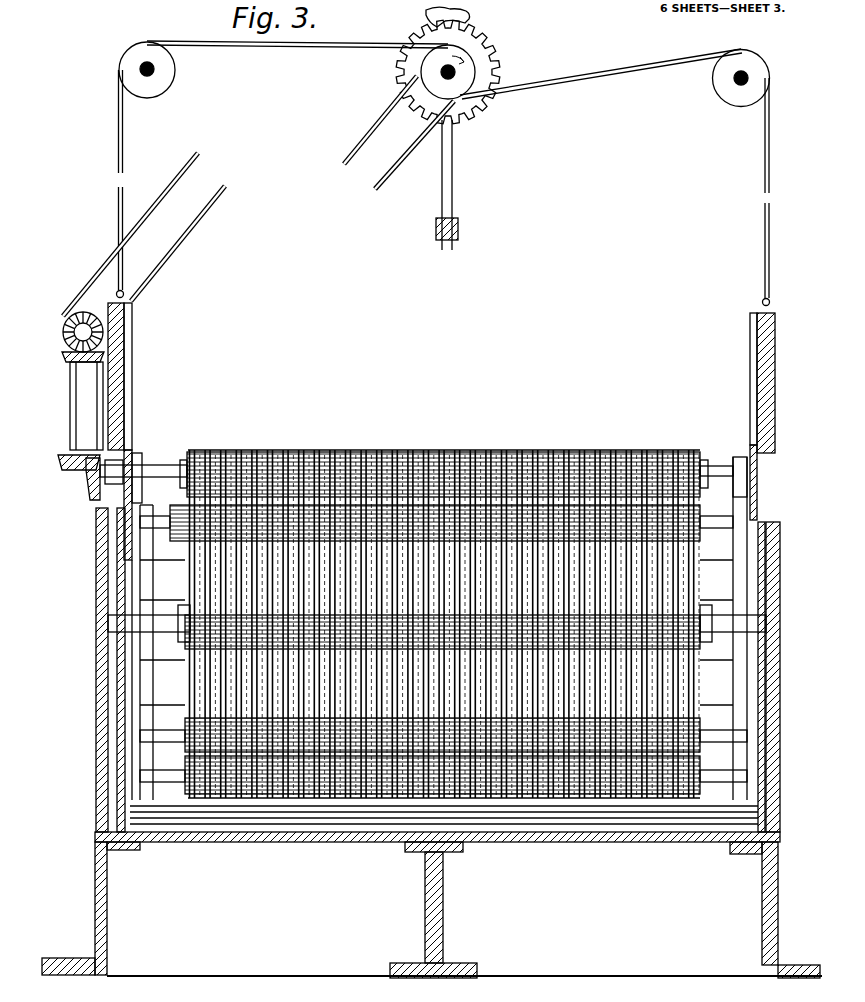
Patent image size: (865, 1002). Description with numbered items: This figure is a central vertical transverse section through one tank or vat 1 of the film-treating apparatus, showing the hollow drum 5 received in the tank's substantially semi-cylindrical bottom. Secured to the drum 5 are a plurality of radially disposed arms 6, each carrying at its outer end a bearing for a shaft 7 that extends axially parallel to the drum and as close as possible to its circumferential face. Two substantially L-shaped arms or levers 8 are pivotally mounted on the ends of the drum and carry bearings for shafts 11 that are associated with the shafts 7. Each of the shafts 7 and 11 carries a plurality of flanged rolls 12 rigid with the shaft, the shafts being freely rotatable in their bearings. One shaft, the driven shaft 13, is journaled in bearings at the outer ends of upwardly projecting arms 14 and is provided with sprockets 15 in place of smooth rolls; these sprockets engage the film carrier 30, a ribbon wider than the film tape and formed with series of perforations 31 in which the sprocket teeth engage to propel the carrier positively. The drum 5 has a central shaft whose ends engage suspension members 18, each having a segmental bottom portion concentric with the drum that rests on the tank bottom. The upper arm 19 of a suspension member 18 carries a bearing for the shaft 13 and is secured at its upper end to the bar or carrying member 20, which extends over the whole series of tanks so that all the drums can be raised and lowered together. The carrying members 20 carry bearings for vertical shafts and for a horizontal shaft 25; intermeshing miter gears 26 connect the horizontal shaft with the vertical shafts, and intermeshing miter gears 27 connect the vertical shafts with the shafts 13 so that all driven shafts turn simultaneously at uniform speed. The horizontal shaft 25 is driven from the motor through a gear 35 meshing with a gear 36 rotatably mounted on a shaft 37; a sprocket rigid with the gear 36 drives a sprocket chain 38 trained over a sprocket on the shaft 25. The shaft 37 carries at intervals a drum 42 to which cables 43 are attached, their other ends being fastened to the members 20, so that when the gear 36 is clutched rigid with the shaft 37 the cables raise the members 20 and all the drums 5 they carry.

The tank or vat 1 is at (300, 843).
The hollow drum 5 is at (162, 652).
The radially disposed arms 6 is at (135, 570).
The shaft 7 is at (130, 525).
The L-shaped arms or levers 8 is at (117, 558).
The shaft 11 is at (115, 633).
The flanged rolls 12 is at (435, 711).
The driven shaft 13 is at (160, 470).
The upwardly projecting arms 14 is at (142, 455).
The sprockets 15 is at (250, 436).
The suspension members 18 is at (117, 805).
The upper arm 19 is at (132, 408).
The bar or carrying member 20 is at (118, 383).
The horizontal shaft 25 is at (125, 310).
The miter gears 26 is at (96, 336).
The miter gears 27 is at (80, 478).
The film carrier 30 is at (318, 452).
The perforations 31 is at (388, 452).
The gear 35 is at (470, 18).
The gear 36 is at (496, 58).
The shaft 37 is at (155, 74).
The sprocket chain 38 is at (358, 143).
The drum 42 is at (175, 68).
The cables 43 is at (123, 145).